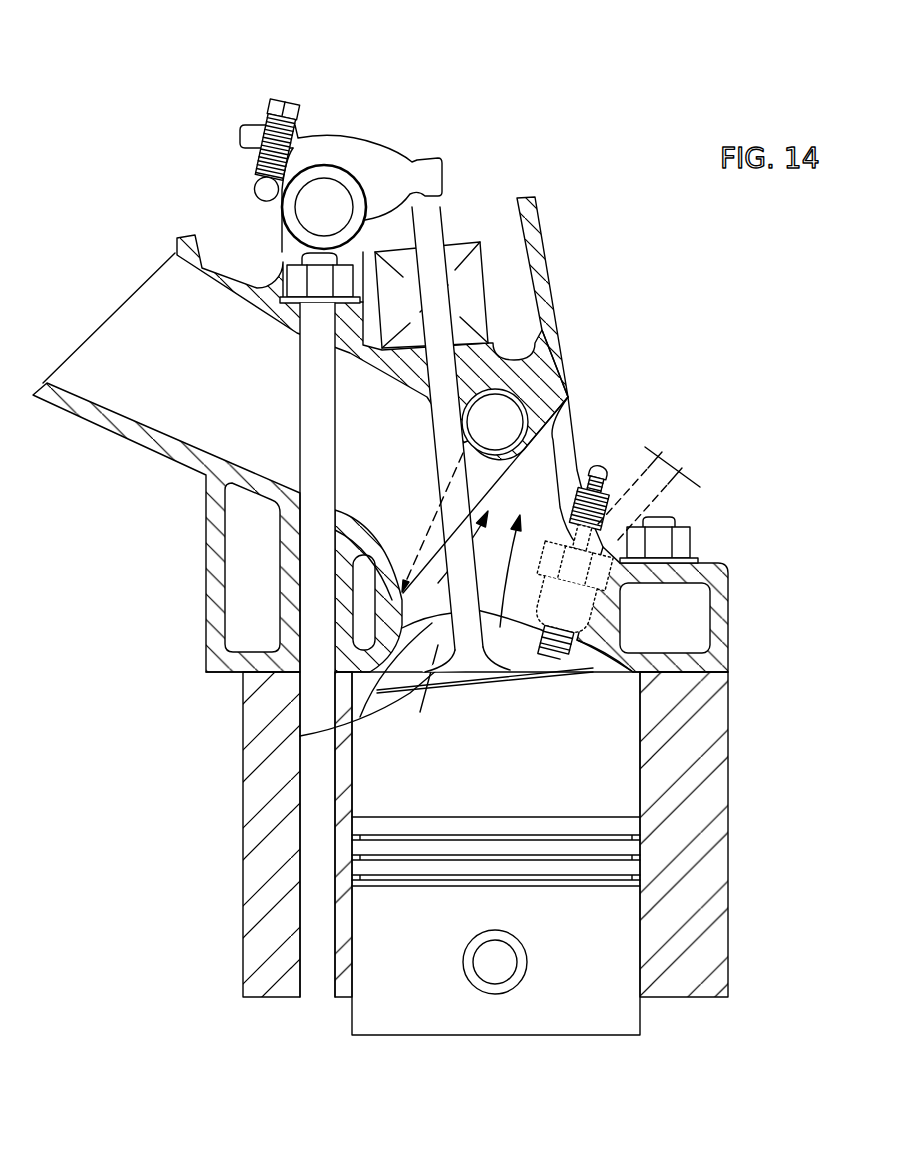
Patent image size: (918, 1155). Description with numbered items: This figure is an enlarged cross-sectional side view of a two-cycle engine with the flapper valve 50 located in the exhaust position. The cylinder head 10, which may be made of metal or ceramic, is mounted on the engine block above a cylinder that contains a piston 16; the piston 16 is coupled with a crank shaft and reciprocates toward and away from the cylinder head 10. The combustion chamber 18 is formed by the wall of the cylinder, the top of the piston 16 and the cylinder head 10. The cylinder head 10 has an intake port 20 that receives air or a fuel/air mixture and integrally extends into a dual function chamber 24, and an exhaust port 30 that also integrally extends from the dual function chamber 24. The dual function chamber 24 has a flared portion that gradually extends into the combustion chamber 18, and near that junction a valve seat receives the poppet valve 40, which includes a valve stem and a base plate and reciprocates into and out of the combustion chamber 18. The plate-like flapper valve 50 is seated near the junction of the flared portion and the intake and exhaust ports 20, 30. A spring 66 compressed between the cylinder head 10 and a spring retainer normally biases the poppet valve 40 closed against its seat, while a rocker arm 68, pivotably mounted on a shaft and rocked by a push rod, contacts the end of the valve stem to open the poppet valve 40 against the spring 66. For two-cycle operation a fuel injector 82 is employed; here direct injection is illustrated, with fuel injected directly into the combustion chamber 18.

The cylinder head 10 is at (170, 514).
The piston 16 is at (604, 1016).
The combustion chamber 18 is at (597, 793).
The intake port 20 is at (196, 386).
The dual function chamber 24 is at (300, 736).
The exhaust port 30 is at (532, 460).
The poppet valve 40 is at (469, 660).
The flapper valve 50 is at (423, 537).
The spring 66 is at (462, 243).
The rocker arm 68 is at (365, 160).
The fuel injector 82 is at (677, 473).